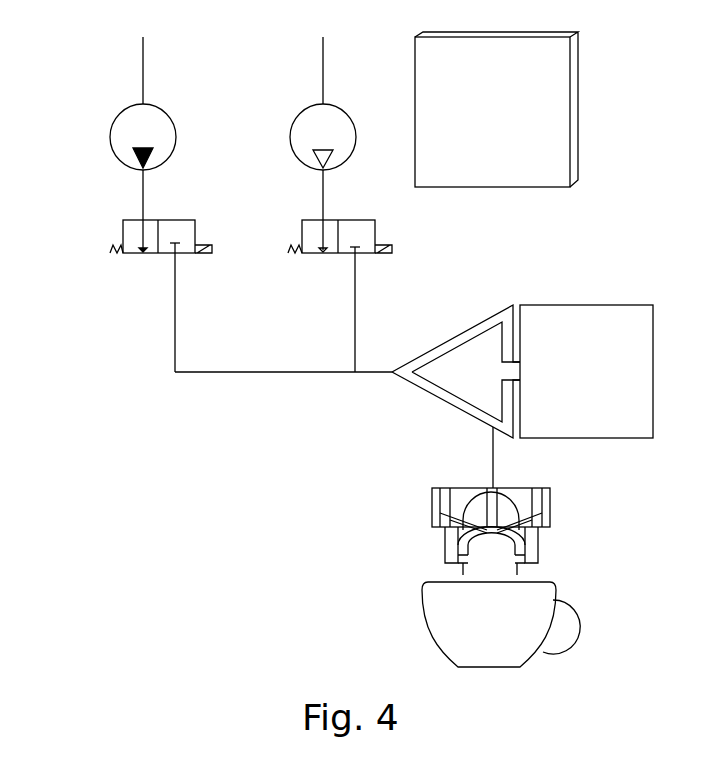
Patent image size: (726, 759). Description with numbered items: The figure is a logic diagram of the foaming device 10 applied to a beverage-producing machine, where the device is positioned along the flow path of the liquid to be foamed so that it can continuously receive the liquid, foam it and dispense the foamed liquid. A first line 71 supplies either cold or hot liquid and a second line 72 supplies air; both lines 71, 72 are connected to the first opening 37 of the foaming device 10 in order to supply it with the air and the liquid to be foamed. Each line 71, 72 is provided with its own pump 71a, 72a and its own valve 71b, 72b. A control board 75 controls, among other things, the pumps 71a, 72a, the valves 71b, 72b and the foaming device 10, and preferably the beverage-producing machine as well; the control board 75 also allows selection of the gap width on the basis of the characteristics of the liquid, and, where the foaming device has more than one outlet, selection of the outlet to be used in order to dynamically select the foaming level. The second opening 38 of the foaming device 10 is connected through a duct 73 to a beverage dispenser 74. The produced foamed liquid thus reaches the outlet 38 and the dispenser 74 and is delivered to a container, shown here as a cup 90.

The foaming device 10 is at (523, 292).
The first opening 37 is at (390, 374).
The second opening 38 is at (497, 433).
The first line 71 is at (143, 52).
The pump 71a is at (128, 127).
The valve 71b is at (132, 259).
The second line 72 is at (322, 52).
The pump 72a is at (308, 128).
The valve 72b is at (314, 259).
The duct 73 is at (492, 447).
The beverage dispenser 74 is at (574, 535).
The control board 75 is at (511, 124).
The cup 90 is at (602, 625).